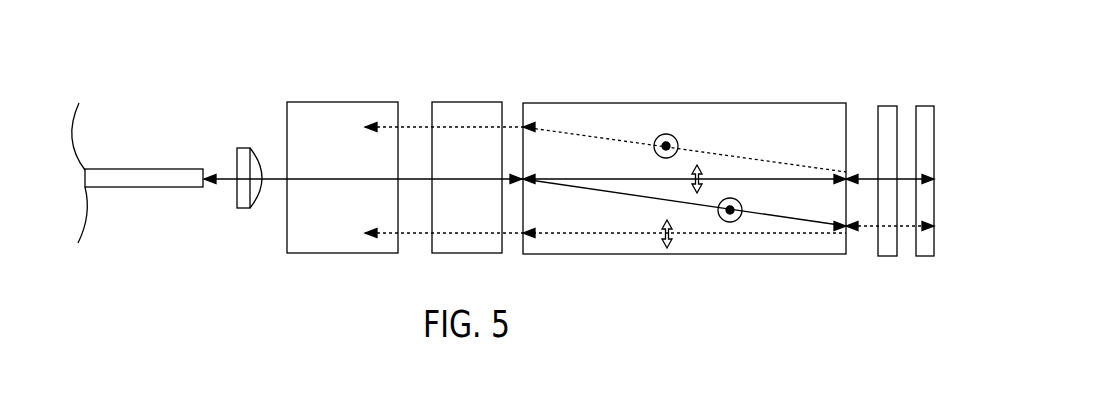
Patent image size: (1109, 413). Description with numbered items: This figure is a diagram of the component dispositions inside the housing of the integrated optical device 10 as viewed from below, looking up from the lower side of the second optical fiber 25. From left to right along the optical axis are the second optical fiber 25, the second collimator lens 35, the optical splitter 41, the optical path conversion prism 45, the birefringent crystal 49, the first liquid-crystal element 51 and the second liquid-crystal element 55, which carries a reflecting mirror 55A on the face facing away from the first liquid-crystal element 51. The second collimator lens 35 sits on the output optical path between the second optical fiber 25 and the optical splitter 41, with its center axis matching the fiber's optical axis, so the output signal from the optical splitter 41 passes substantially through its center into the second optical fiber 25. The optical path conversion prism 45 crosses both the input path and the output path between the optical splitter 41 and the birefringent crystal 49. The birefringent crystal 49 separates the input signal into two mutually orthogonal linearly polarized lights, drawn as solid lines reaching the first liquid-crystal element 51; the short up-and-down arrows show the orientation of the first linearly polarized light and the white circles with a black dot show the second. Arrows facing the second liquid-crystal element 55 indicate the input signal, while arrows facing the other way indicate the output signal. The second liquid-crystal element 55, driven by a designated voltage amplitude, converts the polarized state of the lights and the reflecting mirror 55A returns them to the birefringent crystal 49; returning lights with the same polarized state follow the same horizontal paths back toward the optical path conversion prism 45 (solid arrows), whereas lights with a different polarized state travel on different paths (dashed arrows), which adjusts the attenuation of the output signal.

The integrated optical device 10 is at (603, 85).
The second optical fiber 25 is at (155, 169).
The second collimator lens 35 is at (258, 210).
The optical splitter 41 is at (348, 102).
The optical path conversion prism 45 is at (472, 102).
The birefringent crystal 49 is at (765, 105).
The first liquid-crystal element 51 is at (884, 106).
The second liquid-crystal element 55 is at (922, 257).
The reflecting mirror 55A is at (937, 129).